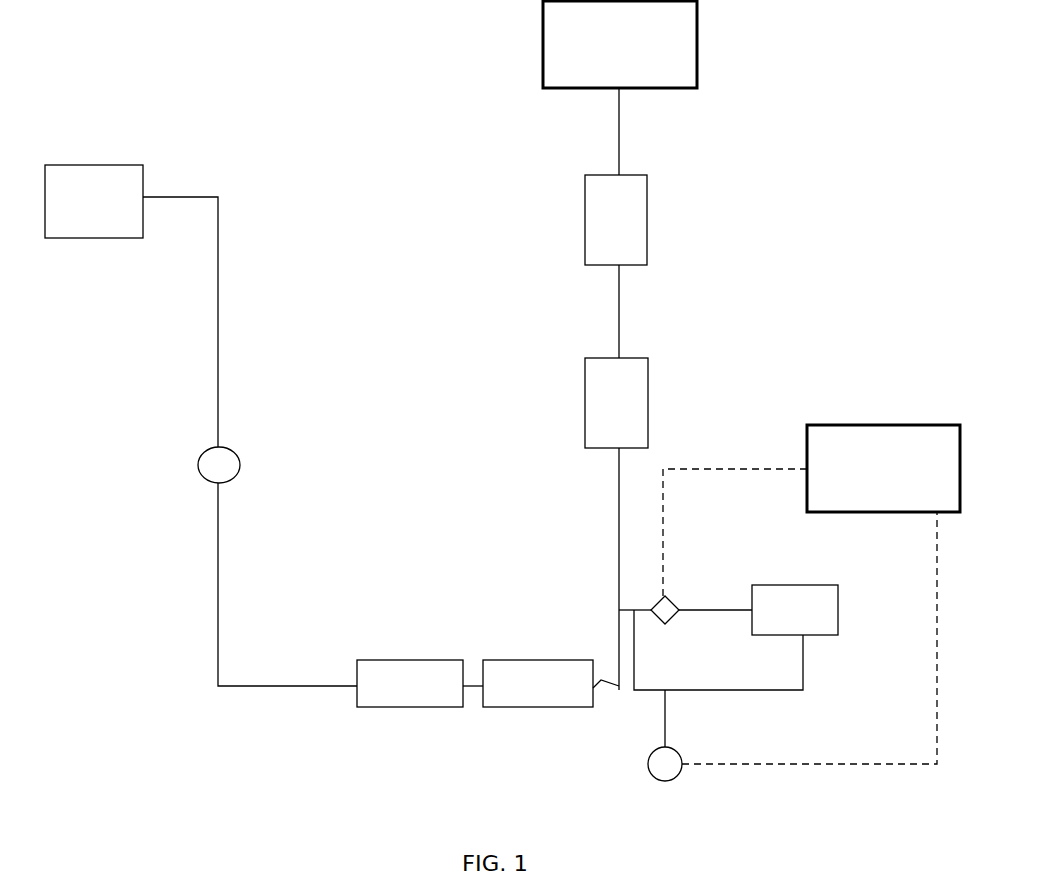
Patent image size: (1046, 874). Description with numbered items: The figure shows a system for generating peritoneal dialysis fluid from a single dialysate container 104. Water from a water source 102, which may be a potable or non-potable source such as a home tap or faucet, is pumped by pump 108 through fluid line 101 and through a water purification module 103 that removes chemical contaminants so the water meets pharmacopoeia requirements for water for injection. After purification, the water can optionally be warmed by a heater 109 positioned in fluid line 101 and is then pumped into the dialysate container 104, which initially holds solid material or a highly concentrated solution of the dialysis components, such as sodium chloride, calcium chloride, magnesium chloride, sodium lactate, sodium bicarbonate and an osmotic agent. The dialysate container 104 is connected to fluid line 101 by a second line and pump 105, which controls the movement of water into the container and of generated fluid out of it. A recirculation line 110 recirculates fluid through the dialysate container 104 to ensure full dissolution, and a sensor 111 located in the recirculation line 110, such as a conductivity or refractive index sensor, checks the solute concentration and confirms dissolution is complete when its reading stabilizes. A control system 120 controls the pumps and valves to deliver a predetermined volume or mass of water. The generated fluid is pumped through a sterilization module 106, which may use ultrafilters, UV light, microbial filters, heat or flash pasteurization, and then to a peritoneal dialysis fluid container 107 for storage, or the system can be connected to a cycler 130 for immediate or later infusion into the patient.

The fluid line 101 is at (270, 686).
The water source 102 is at (94, 201).
The water purification module 103 is at (405, 661).
The dialysate container 104 is at (838, 610).
The pump 105 is at (665, 598).
The sterilization module 106 is at (633, 403).
The peritoneal dialysis fluid container 107 is at (632, 220).
The pump 108 is at (243, 465).
The heater 109 is at (533, 661).
The recirculation line 110 is at (733, 690).
The sensor 111 is at (647, 767).
The control system 120 is at (883, 468).
The cycler 130 is at (620, 44).